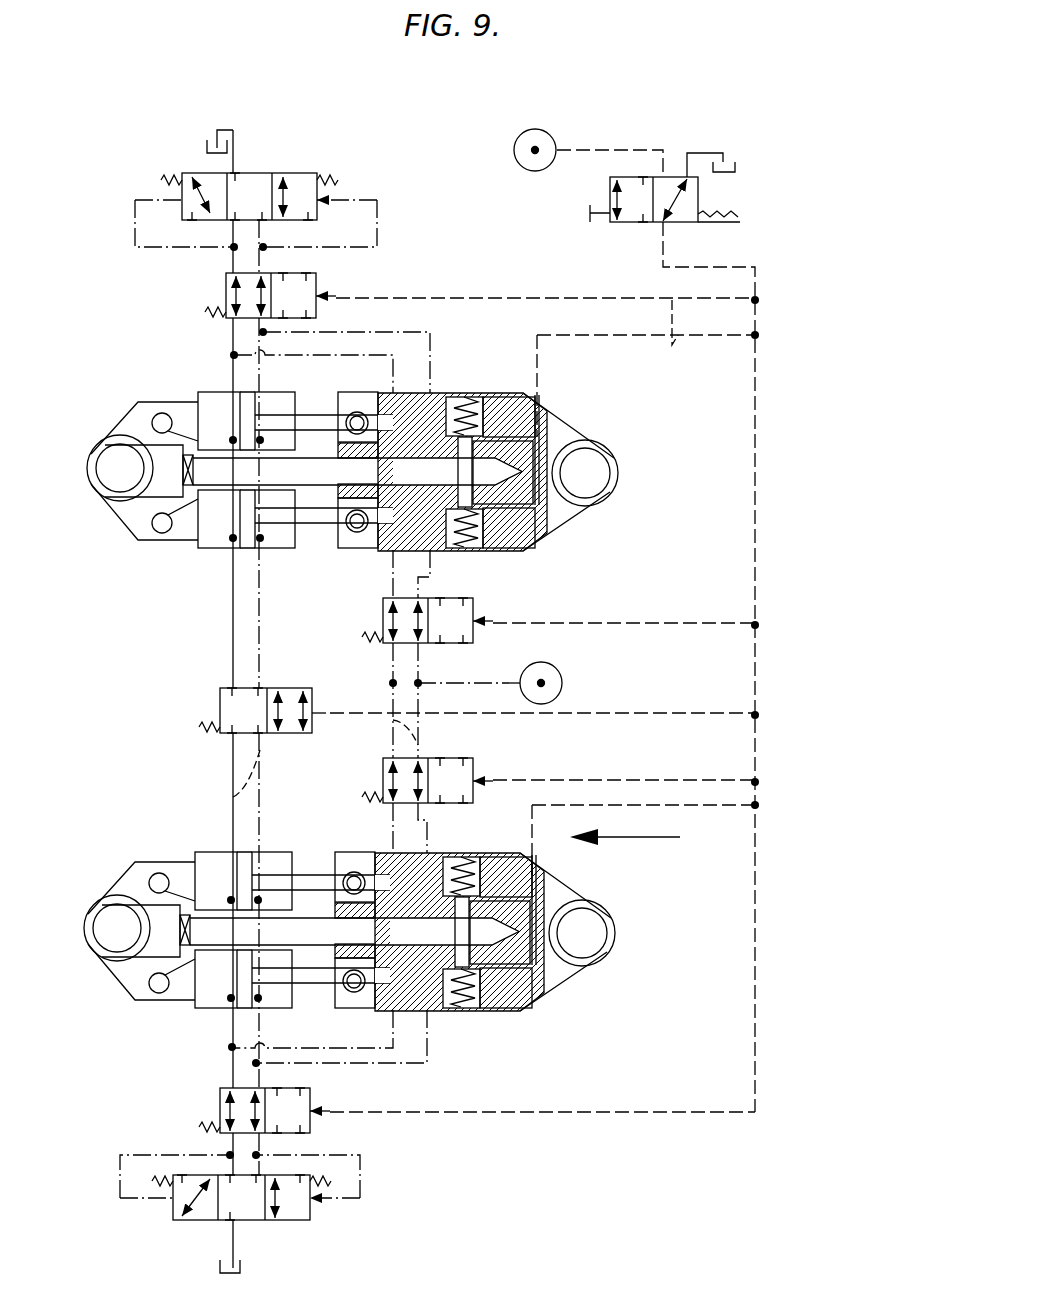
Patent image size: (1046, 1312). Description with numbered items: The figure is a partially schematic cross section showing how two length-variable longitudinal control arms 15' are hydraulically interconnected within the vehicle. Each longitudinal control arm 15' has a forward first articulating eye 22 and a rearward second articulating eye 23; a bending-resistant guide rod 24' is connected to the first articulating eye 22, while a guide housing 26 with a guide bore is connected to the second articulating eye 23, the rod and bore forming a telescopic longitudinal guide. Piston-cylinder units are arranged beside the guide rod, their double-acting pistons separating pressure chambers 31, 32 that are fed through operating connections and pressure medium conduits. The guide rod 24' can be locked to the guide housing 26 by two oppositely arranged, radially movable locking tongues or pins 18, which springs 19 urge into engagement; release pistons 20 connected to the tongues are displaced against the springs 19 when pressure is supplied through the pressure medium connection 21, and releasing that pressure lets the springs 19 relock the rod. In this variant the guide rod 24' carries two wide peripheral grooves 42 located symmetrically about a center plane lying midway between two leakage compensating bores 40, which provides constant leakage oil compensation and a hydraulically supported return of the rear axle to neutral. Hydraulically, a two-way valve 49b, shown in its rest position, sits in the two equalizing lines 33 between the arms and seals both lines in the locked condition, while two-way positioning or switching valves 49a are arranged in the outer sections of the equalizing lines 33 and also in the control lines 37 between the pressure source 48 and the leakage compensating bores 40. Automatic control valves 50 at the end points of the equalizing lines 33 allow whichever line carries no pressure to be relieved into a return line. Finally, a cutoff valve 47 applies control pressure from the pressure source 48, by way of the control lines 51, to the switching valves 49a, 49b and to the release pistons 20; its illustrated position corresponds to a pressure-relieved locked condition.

The longitudinal control arm 15' is at (352, 688).
The locking tongues or pins 18 is at (477, 493).
The springs 19 is at (478, 402).
The pistons 20 is at (480, 433).
The pressure medium connection 21 is at (537, 417).
The first articulating eye 22 is at (107, 493).
The second articulating eye 23 is at (603, 498).
The guide rod 24' is at (322, 700).
The guide housing 26 is at (442, 393).
The pressure chamber 31 is at (213, 402).
The pressure chamber 32 is at (278, 402).
The equalizing lines 33 is at (262, 762).
The control lines 37 is at (418, 733).
The leakage compensating bores 40 is at (398, 548).
The peripheral grooves 42 is at (378, 473).
The cutoff valve 47 is at (698, 198).
The pressure source 48 is at (550, 135).
The two-way positioning or switching valves 49a is at (317, 287).
The two-way valve 49b is at (220, 700).
The automatic control valves 50 is at (297, 173).
The control lines 51 is at (755, 358).